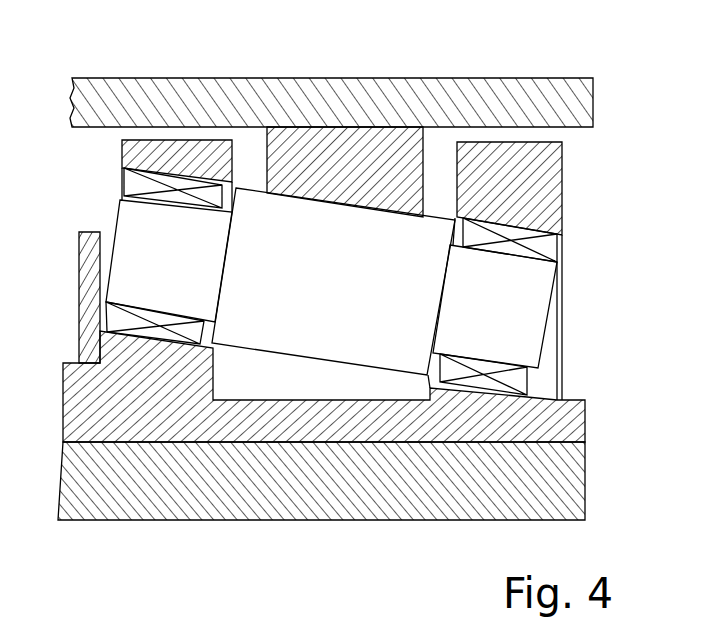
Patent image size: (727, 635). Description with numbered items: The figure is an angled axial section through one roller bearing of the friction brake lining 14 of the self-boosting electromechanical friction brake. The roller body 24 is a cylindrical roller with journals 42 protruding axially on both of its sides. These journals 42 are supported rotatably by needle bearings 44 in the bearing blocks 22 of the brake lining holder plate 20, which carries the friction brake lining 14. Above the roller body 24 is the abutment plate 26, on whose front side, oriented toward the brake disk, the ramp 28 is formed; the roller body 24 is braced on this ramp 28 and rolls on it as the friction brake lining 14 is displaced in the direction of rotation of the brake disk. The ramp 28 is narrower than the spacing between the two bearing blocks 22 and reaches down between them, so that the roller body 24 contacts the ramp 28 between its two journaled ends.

The friction brake lining 14 is at (537, 485).
The brake lining holder plate 20 is at (560, 425).
The bearing blocks 22 is at (125, 157).
The roller body 24 is at (352, 291).
The abutment plate 26 is at (560, 108).
The ramp 28 is at (316, 148).
The journals 42 is at (132, 258).
The needle bearings 44 is at (537, 244).